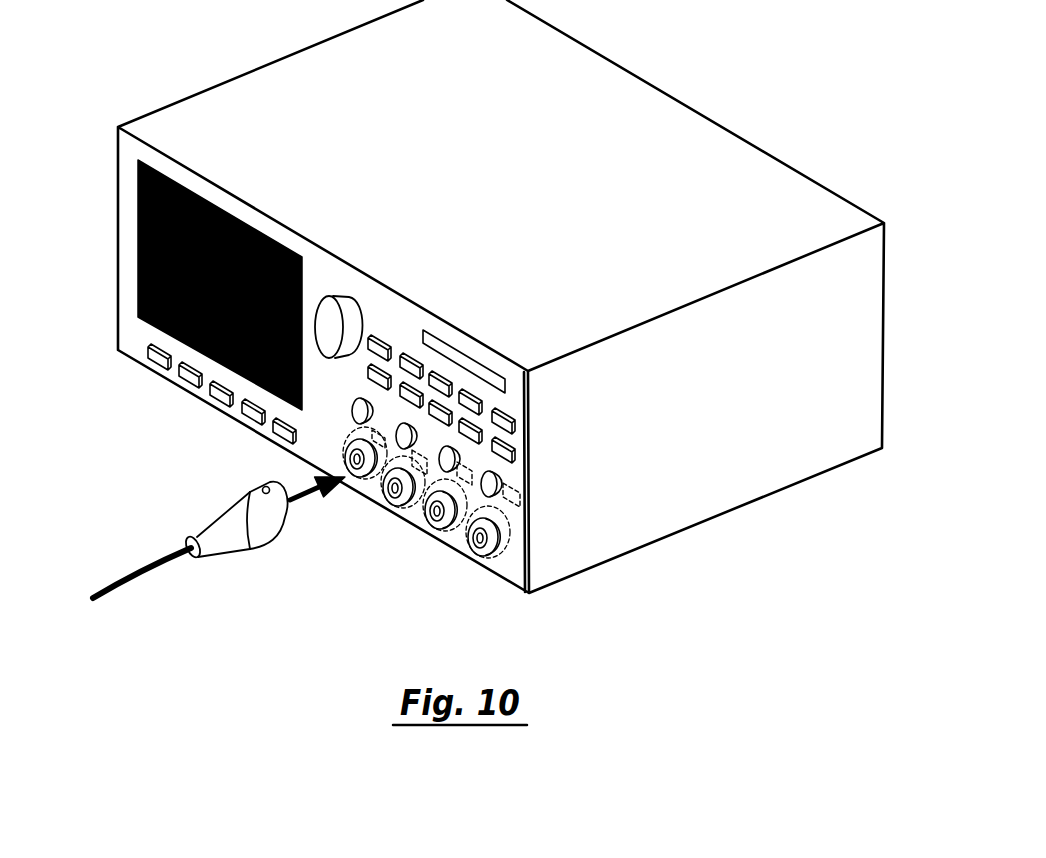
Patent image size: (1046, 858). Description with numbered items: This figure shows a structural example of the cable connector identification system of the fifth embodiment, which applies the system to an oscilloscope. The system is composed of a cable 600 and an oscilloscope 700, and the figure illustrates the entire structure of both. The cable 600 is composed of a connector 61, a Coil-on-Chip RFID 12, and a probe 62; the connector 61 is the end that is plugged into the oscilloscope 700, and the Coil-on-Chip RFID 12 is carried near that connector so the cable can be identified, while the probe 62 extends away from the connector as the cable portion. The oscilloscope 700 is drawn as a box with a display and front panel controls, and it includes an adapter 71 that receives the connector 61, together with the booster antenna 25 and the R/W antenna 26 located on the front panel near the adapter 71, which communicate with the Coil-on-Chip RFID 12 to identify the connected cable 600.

The oscilloscope 700 is at (593, 65).
The cable 600 is at (208, 443).
The connector 61 is at (221, 522).
The probe 62 is at (112, 580).
The Coil-on-Chip RFID 12 is at (258, 488).
The adapter 71 is at (430, 523).
The booster antenna 25 is at (503, 548).
The R/W antenna 26 is at (520, 495).